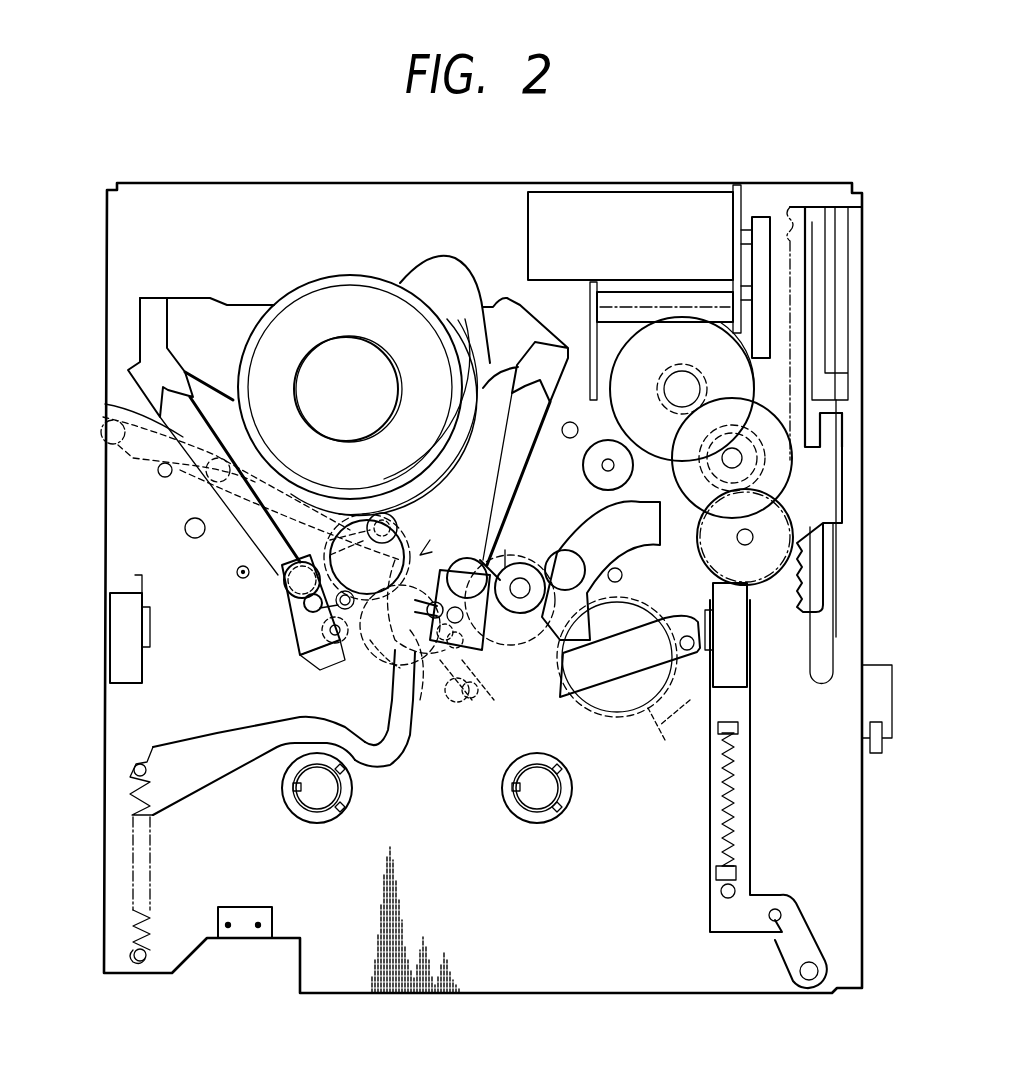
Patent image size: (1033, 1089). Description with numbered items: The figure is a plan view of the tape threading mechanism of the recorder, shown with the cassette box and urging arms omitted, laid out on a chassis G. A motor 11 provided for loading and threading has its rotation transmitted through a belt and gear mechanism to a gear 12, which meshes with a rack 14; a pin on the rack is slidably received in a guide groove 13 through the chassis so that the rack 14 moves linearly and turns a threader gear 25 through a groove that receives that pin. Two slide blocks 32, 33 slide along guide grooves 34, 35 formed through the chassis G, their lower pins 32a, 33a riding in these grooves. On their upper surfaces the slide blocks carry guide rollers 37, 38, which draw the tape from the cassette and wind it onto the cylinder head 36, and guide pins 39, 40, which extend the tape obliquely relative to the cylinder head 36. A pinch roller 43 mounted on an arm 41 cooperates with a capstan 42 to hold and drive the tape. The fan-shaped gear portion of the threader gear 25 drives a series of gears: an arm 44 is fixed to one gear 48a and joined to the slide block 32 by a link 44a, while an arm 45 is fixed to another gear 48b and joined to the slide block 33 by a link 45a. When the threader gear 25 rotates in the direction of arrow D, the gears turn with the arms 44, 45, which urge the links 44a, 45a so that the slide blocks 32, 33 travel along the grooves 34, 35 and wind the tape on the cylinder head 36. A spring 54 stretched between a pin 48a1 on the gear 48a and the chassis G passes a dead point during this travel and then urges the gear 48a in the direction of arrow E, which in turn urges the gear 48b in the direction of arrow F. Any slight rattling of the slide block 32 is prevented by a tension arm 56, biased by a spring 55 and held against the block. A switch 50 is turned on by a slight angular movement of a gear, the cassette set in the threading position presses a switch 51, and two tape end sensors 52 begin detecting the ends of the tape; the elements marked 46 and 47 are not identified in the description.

The chassis G is at (670, 975).
The motor 11 is at (700, 202).
The gear 12 is at (767, 525).
The guide groove 13 is at (835, 582).
The rack 14 is at (826, 458).
The threader gear 25 is at (755, 690).
The slide block 32 is at (308, 610).
The pin 32a is at (330, 640).
The slide block 33 is at (480, 545).
The pin 33a is at (500, 680).
The guide groove 34 is at (105, 428).
The guide groove 35 is at (505, 478).
The cylinder head 36 is at (348, 275).
The guide roller 37 is at (287, 587).
The guide roller 38 is at (465, 560).
The guide pin 39 is at (310, 640).
The guide pin 40 is at (420, 702).
The arm 41 is at (617, 682).
The capstan 42 is at (608, 465).
The pinch roller 43 is at (520, 575).
The arm 44 is at (392, 652).
The link 44a is at (388, 668).
The arm 45 is at (492, 696).
The link 45a is at (468, 705).
The roller 46 is at (562, 552).
The pin 47 is at (600, 590).
The gear 48a is at (350, 540).
The pin 48a1 is at (298, 580).
The gear 48b is at (578, 702).
The switch 50 is at (875, 702).
The switch 51 is at (243, 928).
The tape end sensor 52 is at (737, 650).
The spring 54 is at (118, 447).
The spring 55 is at (150, 855).
The tension arm 56 is at (235, 758).
The arrow D is at (671, 689).
The arrow E is at (427, 537).
The arrow F is at (504, 546).